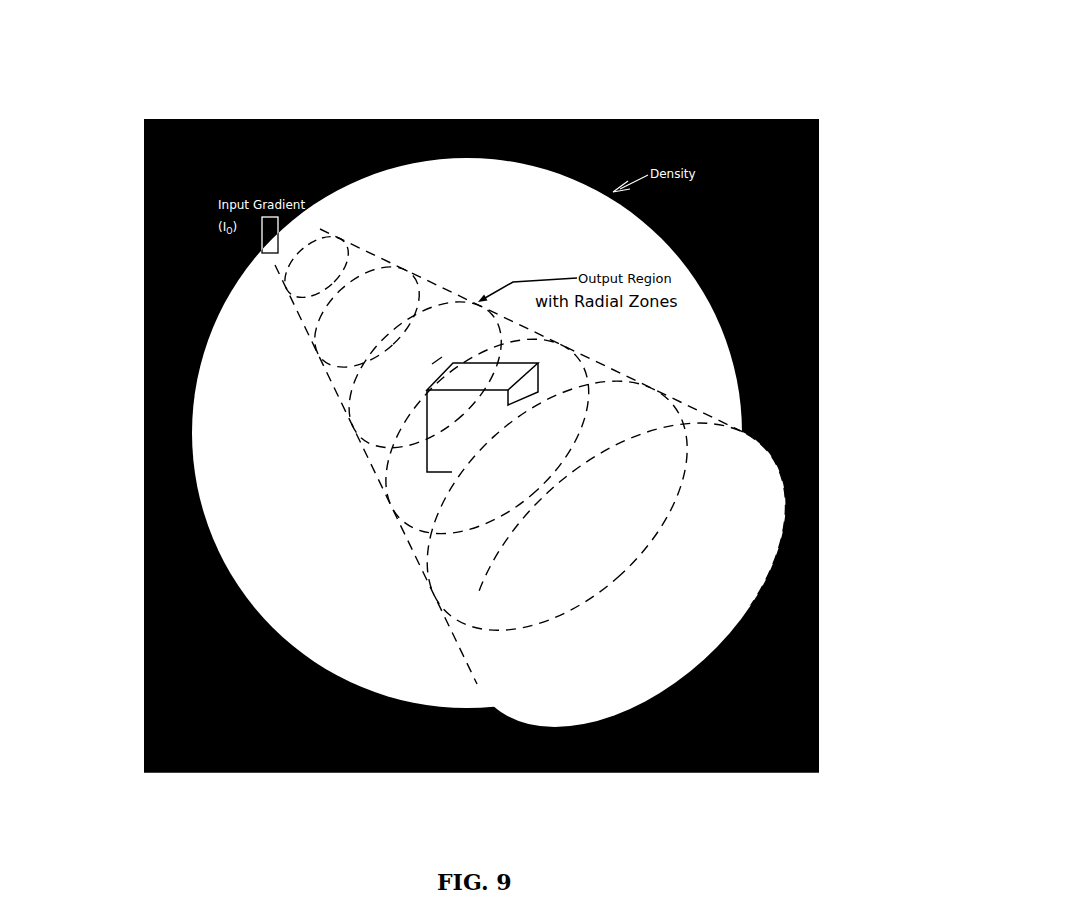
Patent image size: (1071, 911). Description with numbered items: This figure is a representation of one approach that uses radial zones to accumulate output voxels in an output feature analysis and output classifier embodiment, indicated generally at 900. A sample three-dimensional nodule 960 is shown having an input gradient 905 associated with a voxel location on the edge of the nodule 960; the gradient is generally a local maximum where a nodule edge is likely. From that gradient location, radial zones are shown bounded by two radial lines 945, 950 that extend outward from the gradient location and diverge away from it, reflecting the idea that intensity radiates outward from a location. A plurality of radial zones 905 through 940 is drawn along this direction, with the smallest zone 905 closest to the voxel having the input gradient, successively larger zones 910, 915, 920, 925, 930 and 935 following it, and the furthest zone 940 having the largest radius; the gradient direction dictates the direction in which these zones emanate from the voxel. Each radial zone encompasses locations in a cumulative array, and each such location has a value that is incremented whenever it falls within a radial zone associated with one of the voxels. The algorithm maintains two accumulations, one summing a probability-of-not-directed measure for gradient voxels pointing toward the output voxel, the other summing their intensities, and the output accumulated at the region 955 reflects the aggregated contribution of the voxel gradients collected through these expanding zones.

The output region with radial zones diagram 900 is at (806, 77).
The input gradient 905 is at (272, 278).
The radial zone 910 is at (288, 323).
The radial zone 915 is at (313, 367).
The radial zone 920 is at (343, 413).
The radial zone 925 is at (392, 490).
The radial zone 930 is at (433, 560).
The radial zone 935 is at (453, 632).
The furthest radial zone 940 is at (765, 533).
The radial line 945 is at (700, 407).
The radial line 950 is at (412, 772).
The output value 955 is at (532, 368).
The nodule 960 is at (502, 183).